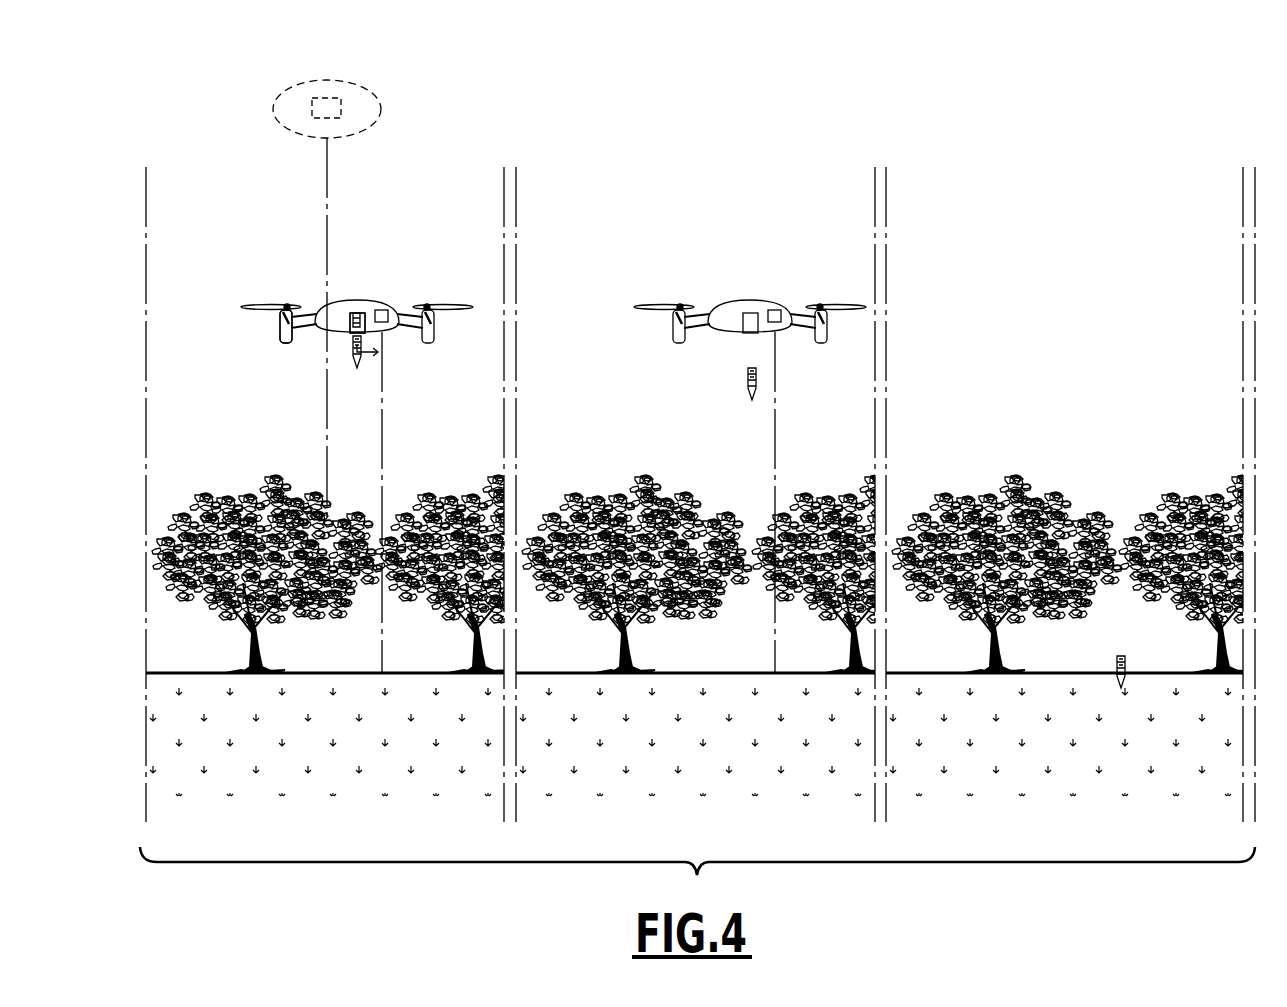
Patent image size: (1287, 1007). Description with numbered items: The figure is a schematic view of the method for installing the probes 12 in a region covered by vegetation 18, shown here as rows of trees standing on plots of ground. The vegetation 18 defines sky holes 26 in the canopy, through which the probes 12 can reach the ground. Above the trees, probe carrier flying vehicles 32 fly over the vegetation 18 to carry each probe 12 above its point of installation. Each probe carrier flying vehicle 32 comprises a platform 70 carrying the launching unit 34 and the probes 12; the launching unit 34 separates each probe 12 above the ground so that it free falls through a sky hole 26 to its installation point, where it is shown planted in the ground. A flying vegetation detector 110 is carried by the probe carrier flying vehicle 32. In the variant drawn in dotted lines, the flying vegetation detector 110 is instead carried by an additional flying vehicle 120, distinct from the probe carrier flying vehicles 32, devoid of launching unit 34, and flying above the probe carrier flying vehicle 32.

The probe 12 is at (355, 358).
The vegetation 18 is at (223, 487).
The sky hole 26 is at (386, 553).
The probe carrier flying vehicle 32 is at (393, 283).
The launching unit 34 is at (357, 313).
The platform 70 is at (320, 333).
The flying vegetation detector 110 is at (341, 108).
The additional flying vehicle 120 is at (338, 82).